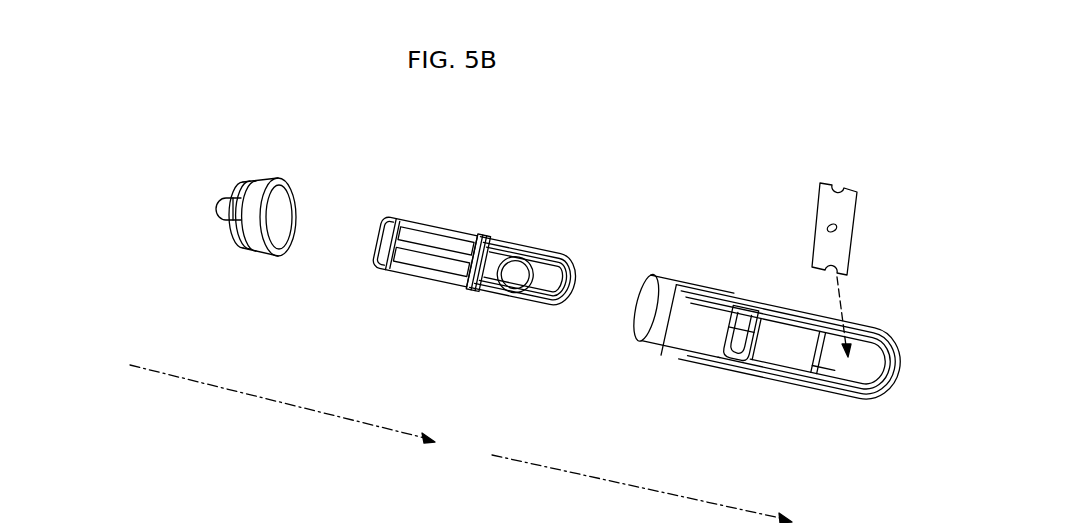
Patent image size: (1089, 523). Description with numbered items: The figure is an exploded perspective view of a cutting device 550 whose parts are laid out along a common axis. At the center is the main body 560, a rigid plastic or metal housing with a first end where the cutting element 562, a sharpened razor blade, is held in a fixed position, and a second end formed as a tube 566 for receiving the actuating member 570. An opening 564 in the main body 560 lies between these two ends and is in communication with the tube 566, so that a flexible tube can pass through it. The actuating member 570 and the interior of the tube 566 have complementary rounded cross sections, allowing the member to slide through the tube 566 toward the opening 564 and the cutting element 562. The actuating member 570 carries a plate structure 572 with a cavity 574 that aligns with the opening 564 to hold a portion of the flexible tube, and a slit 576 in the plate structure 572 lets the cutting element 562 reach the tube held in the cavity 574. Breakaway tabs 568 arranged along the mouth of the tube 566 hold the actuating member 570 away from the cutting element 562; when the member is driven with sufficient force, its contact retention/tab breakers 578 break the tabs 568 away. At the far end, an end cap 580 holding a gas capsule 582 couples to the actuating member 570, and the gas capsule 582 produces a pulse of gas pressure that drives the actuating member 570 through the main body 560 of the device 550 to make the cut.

The cutting device 550 is at (818, 71).
The main body 560 is at (767, 300).
The cutting element 562 is at (850, 220).
The opening 564 is at (782, 343).
The tube 566 is at (668, 325).
The tabs 568 is at (733, 335).
The actuating member 570 is at (432, 228).
The plate structure 572 is at (543, 283).
The cavity 574 is at (472, 292).
The slit 576 is at (568, 272).
The contact retention/tab breakers 578 is at (483, 243).
The end cap 580 is at (258, 195).
The gas capsule 582 is at (230, 218).